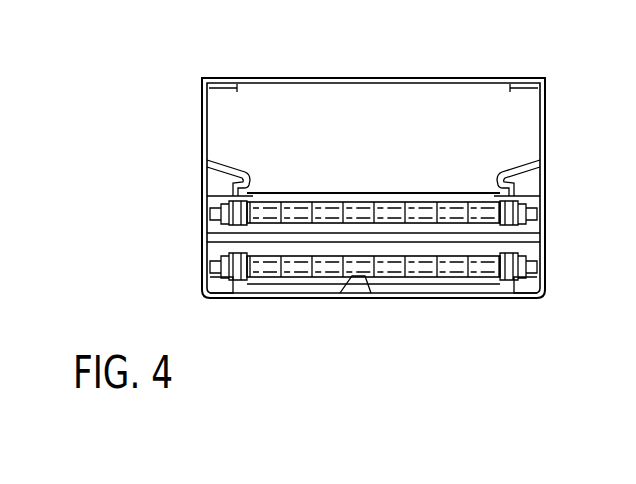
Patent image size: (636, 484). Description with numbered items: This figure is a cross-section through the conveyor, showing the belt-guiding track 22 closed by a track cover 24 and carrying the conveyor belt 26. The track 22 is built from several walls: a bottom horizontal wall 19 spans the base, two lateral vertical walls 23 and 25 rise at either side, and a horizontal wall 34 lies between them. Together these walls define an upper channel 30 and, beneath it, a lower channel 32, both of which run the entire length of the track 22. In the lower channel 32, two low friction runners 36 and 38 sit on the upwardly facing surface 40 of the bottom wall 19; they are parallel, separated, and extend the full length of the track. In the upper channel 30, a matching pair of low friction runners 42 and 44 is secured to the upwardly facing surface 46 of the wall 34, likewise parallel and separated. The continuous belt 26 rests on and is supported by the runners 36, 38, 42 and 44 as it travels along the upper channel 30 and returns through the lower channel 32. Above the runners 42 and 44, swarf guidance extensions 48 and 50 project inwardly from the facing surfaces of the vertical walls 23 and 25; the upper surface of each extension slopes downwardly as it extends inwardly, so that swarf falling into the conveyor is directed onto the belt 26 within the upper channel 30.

The bottom horizontal wall 19 is at (424, 298).
The belt-guiding track 22 is at (543, 183).
The lateral vertical wall 23 is at (210, 232).
The track cover 24 is at (486, 80).
The lateral vertical wall 25 is at (543, 158).
The conveyor belt 26 is at (478, 268).
The upper channel 30 is at (212, 203).
The lower channel 32 is at (212, 250).
The wall 34 is at (523, 238).
The low friction runner 36 is at (223, 285).
The low friction runner 38 is at (518, 287).
The upwardly facing surface 40 is at (342, 292).
The low friction runner 42 is at (215, 194).
The low friction runner 44 is at (510, 232).
The upwardly facing surface 46 is at (443, 232).
The swarf guidance extension 48 is at (254, 178).
The swarf guidance extension 50 is at (500, 180).